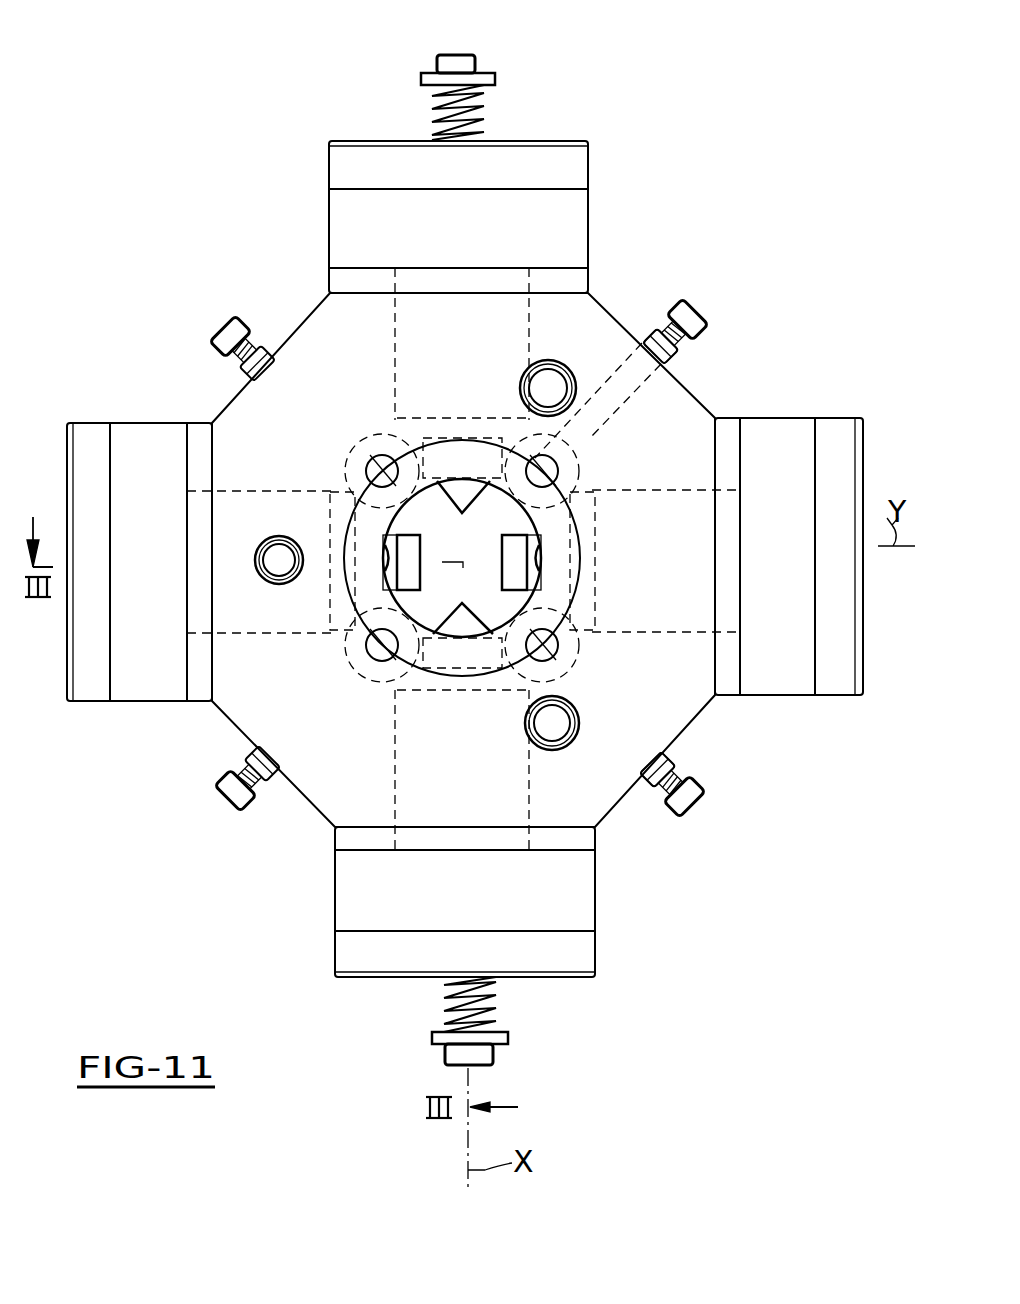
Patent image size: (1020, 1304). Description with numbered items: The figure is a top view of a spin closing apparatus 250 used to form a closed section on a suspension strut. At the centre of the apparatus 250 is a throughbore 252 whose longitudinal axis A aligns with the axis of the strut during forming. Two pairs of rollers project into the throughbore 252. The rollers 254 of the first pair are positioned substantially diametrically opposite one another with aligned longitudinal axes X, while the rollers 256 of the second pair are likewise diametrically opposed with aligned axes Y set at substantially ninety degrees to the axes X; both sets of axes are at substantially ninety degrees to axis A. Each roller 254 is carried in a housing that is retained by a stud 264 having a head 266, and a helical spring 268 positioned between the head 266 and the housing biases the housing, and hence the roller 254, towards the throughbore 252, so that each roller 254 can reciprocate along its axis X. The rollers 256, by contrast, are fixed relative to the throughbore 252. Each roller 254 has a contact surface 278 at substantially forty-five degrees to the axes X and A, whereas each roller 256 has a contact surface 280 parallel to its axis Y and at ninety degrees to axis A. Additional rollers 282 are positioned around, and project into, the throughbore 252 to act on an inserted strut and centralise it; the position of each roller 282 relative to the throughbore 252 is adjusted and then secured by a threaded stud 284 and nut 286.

The spin closing apparatus 250 is at (658, 216).
The throughbore 252 is at (455, 497).
The rollers of the first pair 254 is at (462, 460).
The rollers of the second pair 256 is at (598, 538).
The stud 264 is at (452, 101).
The head 266 is at (468, 63).
The helical spring 268 is at (490, 104).
The contact surface 278 is at (451, 584).
The contact surface 280 is at (412, 557).
The additional rollers 282 is at (565, 472).
The threaded stud 284 is at (690, 343).
The nut 286 is at (650, 327).